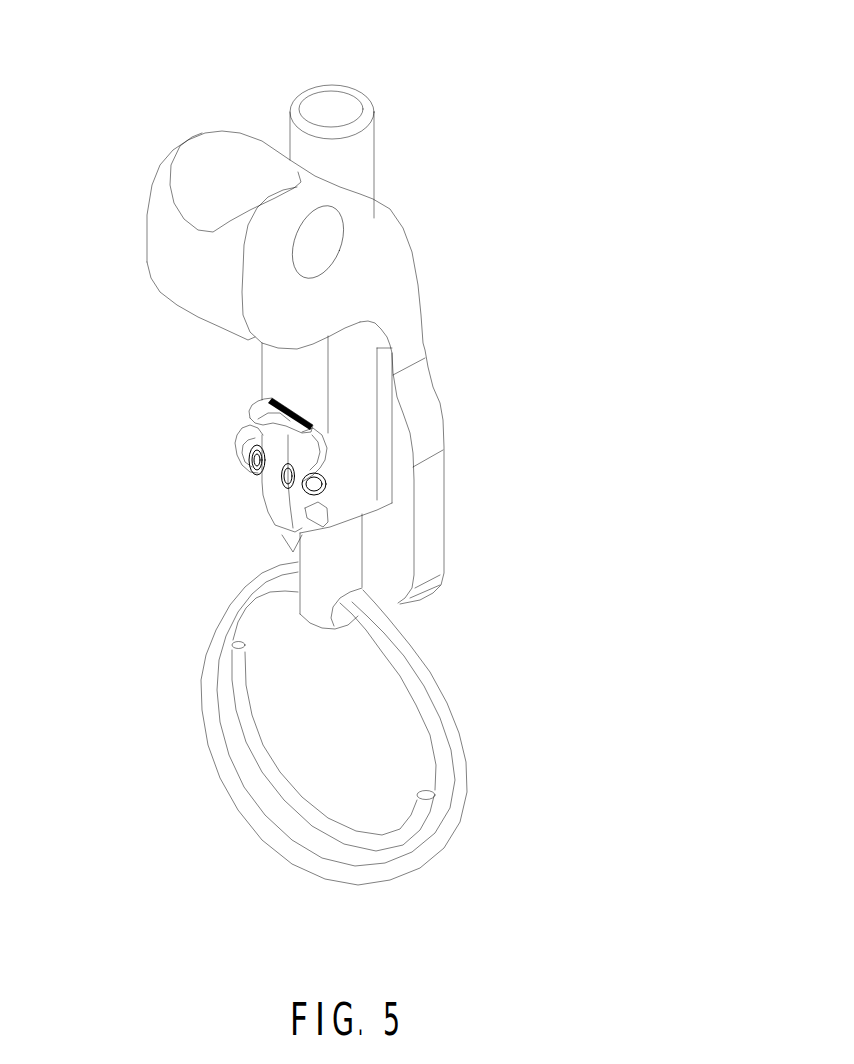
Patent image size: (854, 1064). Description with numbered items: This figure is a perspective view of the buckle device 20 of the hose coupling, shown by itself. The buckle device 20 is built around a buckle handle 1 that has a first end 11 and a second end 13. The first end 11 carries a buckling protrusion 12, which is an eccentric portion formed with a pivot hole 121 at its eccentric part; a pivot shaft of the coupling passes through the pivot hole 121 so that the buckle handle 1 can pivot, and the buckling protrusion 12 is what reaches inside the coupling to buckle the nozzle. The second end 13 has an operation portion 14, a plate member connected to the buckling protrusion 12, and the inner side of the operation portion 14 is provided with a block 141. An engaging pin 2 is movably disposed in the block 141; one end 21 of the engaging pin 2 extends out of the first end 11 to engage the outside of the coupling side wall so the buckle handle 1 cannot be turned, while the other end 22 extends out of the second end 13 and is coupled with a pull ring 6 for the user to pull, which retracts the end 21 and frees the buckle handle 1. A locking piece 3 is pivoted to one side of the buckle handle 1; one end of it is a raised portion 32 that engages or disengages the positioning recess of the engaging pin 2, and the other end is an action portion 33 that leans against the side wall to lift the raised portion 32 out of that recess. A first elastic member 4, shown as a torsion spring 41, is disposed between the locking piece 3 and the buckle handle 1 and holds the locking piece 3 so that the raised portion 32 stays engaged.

The buckle handle 1 is at (334, 367).
The first end 11 is at (235, 145).
The buckling protrusion 12 is at (157, 282).
The pivot hole 121 is at (385, 231).
The engaging pin 2 is at (375, 151).
The end of the engaging pin 21 is at (348, 69).
The block 141 is at (402, 427).
The operation portion 14 is at (462, 478).
The second end 13 is at (470, 614).
The buckle device 20 is at (529, 565).
The action portion 33 is at (227, 428).
The first elastic member 4 is at (169, 450).
The torsion spring 41 is at (288, 476).
The locking piece 3 is at (216, 493).
The raised portion 32 is at (252, 571).
The pull ring 6 is at (377, 723).
The other end of the engaging pin 22 is at (281, 711).